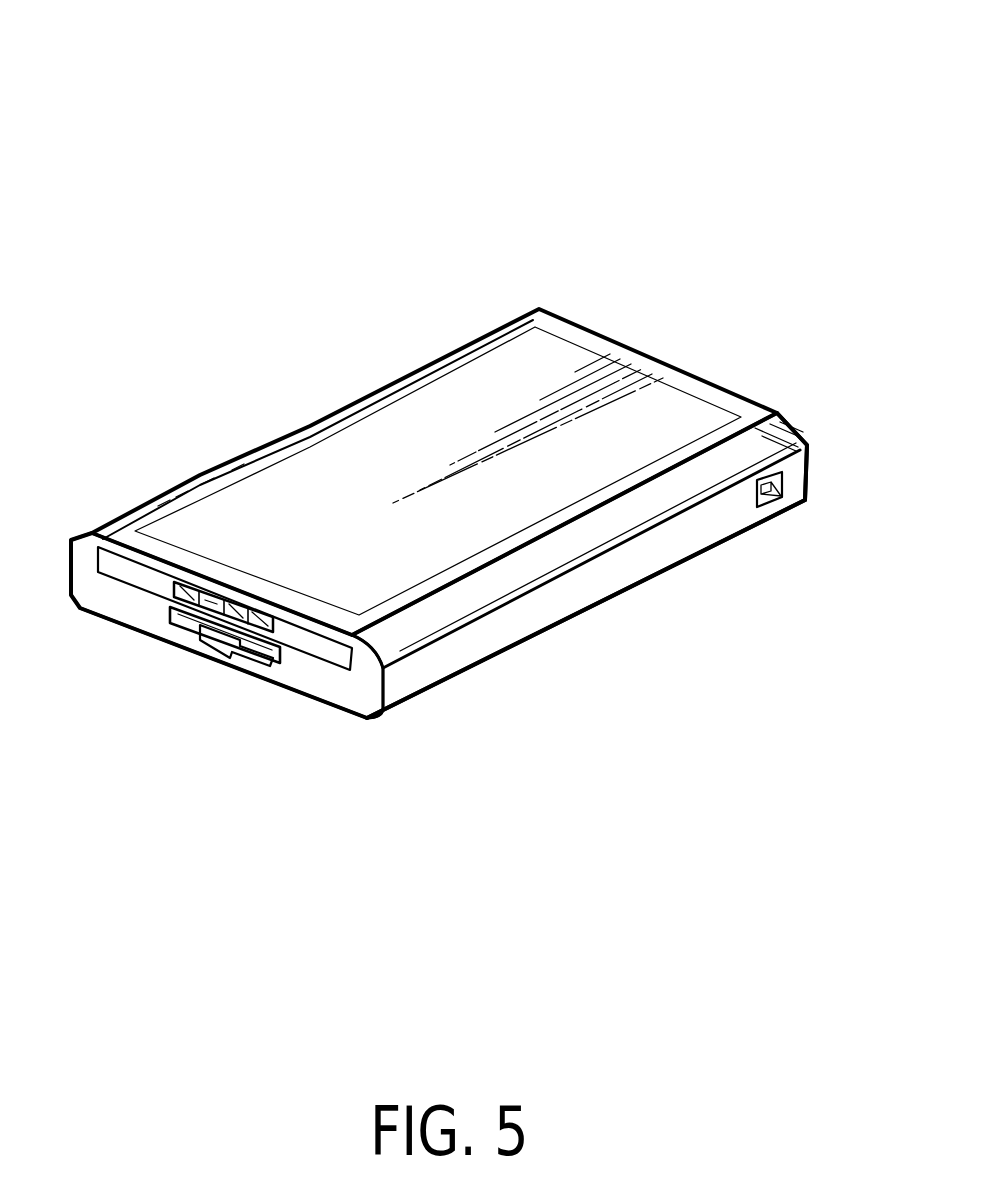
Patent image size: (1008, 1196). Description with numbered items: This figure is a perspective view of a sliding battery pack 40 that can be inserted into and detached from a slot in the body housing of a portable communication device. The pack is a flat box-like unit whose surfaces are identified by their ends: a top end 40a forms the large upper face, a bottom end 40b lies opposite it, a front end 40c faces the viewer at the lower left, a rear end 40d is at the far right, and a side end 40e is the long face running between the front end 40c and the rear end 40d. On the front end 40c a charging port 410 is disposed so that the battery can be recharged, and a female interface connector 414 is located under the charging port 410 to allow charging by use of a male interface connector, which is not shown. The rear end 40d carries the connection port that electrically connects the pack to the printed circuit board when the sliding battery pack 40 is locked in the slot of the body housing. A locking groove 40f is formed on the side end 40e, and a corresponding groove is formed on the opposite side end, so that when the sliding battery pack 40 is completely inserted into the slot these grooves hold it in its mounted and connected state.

The sliding battery pack 40 is at (353, 370).
The top end 40a is at (505, 380).
The bottom end 40b is at (238, 670).
The front end 40c is at (362, 693).
The rear end 40d is at (811, 458).
The side end 40e is at (513, 617).
The locking groove 40f is at (783, 490).
The charging port 410 is at (300, 652).
The female interface connector 414 is at (213, 655).